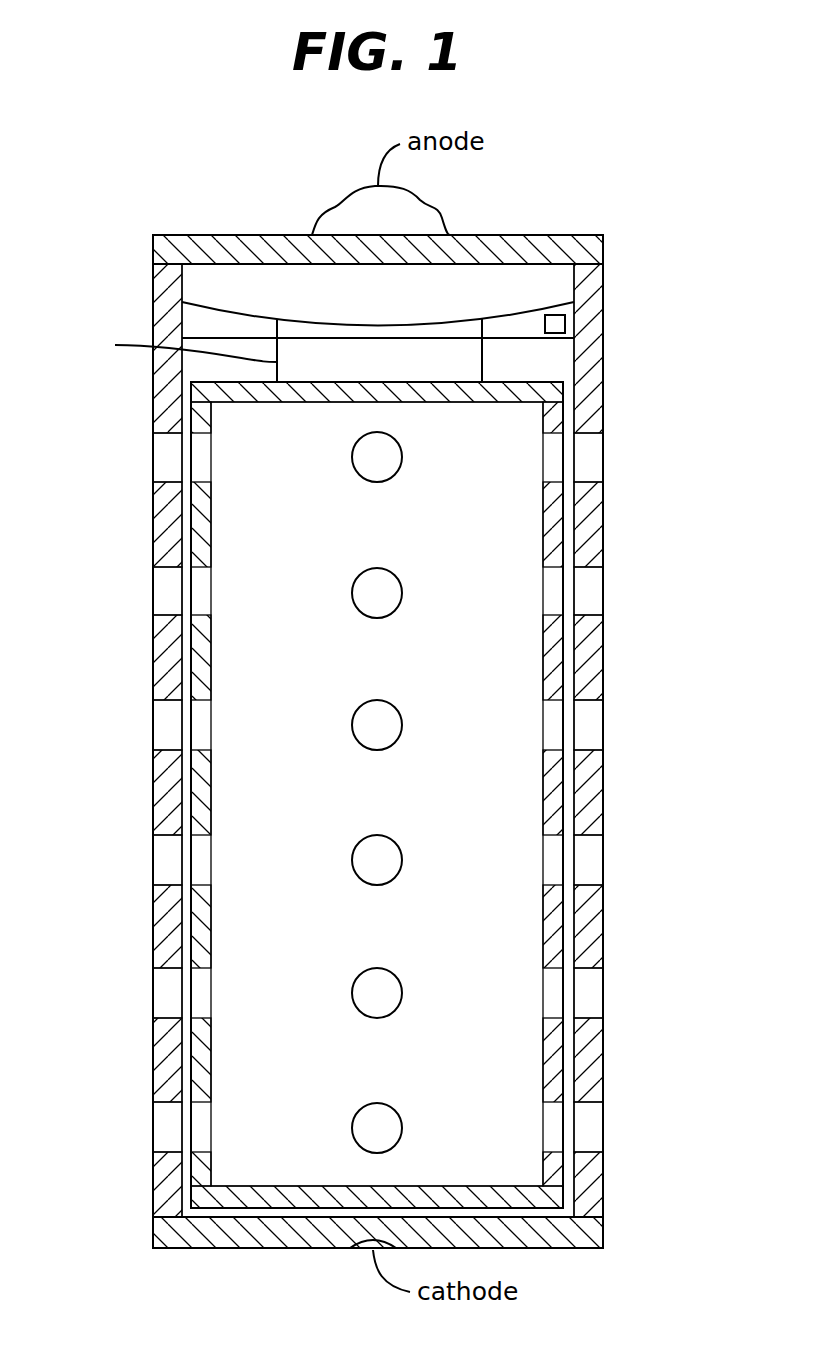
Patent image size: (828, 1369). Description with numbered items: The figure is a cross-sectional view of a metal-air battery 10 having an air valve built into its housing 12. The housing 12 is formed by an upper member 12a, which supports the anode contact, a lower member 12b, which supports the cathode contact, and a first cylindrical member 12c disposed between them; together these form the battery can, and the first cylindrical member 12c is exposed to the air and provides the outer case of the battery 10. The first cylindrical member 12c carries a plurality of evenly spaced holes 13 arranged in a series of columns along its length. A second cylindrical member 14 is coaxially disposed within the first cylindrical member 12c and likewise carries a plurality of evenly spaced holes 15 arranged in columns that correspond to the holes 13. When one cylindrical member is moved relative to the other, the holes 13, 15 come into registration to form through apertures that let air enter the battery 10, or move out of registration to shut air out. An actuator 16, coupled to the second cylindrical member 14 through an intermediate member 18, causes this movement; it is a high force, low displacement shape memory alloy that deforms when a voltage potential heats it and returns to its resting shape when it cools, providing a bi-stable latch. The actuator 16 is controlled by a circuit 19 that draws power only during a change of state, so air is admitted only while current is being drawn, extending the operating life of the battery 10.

The battery 10 is at (128, 146).
The housing 12 is at (606, 289).
The upper member 12a is at (513, 235).
The lower member 12b is at (252, 1249).
The first cylindrical member 12c is at (604, 531).
The holes 13 is at (163, 458).
The second cylindrical member 14 is at (535, 383).
The holes 15 is at (370, 482).
The actuator 16 is at (228, 312).
The intermediate member 18 is at (180, 345).
The circuit 19 is at (565, 323).